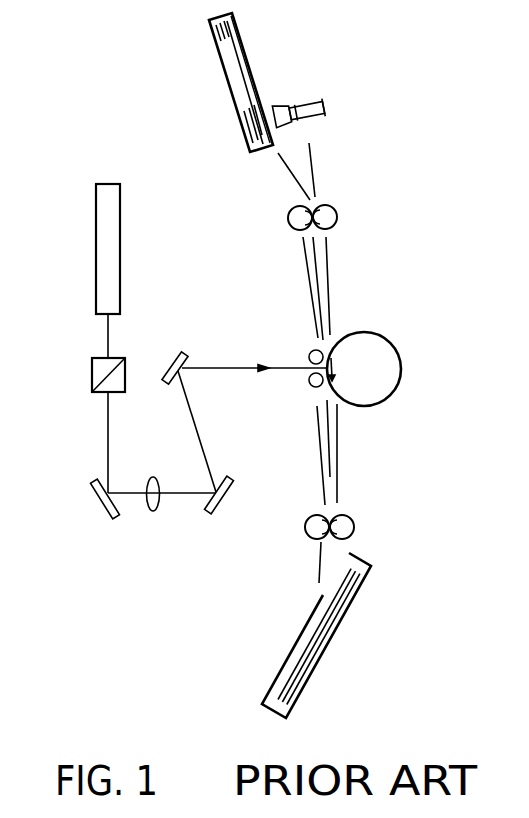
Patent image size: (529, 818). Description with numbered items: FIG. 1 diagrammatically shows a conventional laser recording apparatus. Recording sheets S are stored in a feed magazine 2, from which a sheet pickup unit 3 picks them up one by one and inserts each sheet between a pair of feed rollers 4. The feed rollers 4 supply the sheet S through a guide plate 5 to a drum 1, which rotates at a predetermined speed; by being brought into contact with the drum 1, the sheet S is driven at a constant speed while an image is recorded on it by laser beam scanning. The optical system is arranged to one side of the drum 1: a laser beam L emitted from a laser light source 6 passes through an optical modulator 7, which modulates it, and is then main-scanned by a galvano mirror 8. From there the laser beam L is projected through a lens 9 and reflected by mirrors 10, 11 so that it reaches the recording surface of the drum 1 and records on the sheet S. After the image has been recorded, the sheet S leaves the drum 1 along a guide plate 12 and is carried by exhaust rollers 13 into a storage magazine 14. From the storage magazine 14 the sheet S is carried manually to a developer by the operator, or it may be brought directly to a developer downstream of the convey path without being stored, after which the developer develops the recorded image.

The drum 1 is at (402, 368).
The feed magazine 2 is at (229, 75).
The sheet pickup unit 3 is at (287, 106).
The feed rollers 4 is at (288, 218).
The guide plate 5 is at (330, 278).
The laser light source 6 is at (96, 255).
The optical modulator 7 is at (92, 373).
The galvano mirror 8 is at (97, 506).
The lens 9 is at (153, 512).
The mirror 10 is at (212, 508).
The mirror 11 is at (177, 353).
The guide plate 12 is at (337, 460).
The exhaust rollers 13 is at (305, 524).
The storage magazine 14 is at (333, 635).
The recording sheet S is at (245, 62).
The laser beam L is at (225, 367).